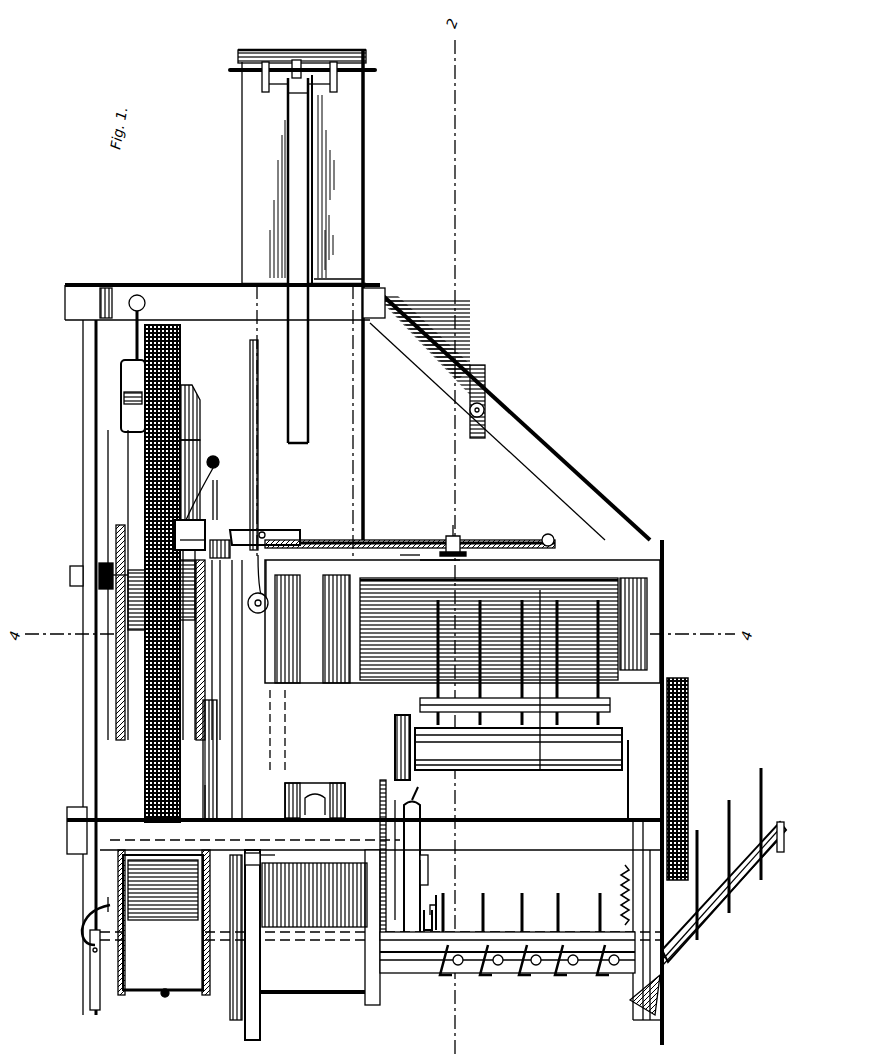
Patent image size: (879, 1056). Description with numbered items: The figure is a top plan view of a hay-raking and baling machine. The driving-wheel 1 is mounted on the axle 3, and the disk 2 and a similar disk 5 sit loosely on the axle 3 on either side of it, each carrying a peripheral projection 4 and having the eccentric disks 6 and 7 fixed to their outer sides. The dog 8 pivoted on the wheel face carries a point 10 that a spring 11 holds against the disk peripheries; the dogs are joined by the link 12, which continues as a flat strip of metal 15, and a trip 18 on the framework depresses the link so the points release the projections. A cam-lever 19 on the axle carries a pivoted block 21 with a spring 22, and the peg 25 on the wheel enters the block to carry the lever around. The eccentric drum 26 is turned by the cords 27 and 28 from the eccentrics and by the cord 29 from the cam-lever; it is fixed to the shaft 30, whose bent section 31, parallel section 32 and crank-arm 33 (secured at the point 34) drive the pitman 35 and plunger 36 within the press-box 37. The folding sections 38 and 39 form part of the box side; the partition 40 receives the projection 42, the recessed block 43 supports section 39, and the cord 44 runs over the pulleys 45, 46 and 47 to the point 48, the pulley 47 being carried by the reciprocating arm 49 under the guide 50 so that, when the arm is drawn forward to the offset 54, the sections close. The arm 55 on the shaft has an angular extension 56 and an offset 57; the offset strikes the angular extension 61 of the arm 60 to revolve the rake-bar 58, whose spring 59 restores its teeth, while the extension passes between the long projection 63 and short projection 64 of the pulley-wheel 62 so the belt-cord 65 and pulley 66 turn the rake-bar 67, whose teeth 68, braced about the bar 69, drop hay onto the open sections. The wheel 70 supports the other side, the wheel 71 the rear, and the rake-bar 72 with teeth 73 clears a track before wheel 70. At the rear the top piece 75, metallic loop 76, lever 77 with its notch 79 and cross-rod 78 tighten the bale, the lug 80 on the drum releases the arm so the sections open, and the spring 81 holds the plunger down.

The driving-wheel 1 is at (145, 705).
The disk 2 is at (145, 630).
The axle 3 is at (78, 586).
The projection 4 is at (128, 598).
The disk 5 is at (190, 630).
The eccentric disk 6 is at (118, 530).
The eccentric disk 7 is at (190, 535).
The dog 8 is at (130, 472).
The point 10 is at (100, 562).
The spring 11 is at (140, 500).
The link 12 is at (122, 396).
The flat strip of metal 15 is at (193, 392).
The trip 18 is at (135, 340).
The cam-lever 19 is at (220, 650).
The pivoted block 21 is at (208, 493).
The spring 22 is at (219, 497).
The peg 25 is at (219, 460).
The eccentric drum 26 is at (163, 922).
The cord 27 is at (205, 960).
The cord 28 is at (125, 990).
The cord 29 is at (225, 768).
The shaft 30 is at (88, 940).
The section 31 is at (98, 912).
The parallel section 32 is at (250, 853).
The crank-arm 33 is at (333, 785).
The point 34 is at (325, 940).
The pitman 35 is at (318, 790).
The plunger 36 is at (372, 545).
The press-box 37 is at (301, 422).
The folding section 38 is at (465, 585).
The folding section 39 is at (560, 582).
The partition 40 is at (520, 560).
The projection 42 is at (548, 534).
The recessed block 43 is at (640, 600).
The cord 44 is at (468, 525).
The pulley 45 is at (451, 530).
The pulley 46 is at (255, 535).
The pulley 47 is at (228, 650).
The point 48 is at (410, 540).
The reciprocating arm 49 is at (258, 708).
The guide 50 is at (227, 577).
The offset 54 is at (268, 855).
The arm 55 is at (422, 830).
The angular extension 56 is at (425, 864).
The offset 57 is at (428, 862).
The revolving rake-bar 58 is at (425, 965).
The spring 59 is at (623, 880).
The arm 60 is at (440, 920).
The angular extension 61 is at (439, 901).
The pulley-wheel 62 is at (415, 848).
The long projection 63 is at (426, 783).
The short projection 64 is at (422, 808).
The belt-cord 65 is at (405, 822).
The pulley 66 is at (396, 722).
The revolving rake-bar 67 is at (518, 749).
The teeth 68 is at (605, 700).
The bar 69 is at (540, 770).
The wheel 70 is at (688, 740).
The wheel 71 is at (487, 378).
The rake-bar 72 is at (718, 935).
The teeth 73 is at (762, 840).
The top piece 75 is at (302, 295).
The metallic loop 76 is at (372, 65).
The lever 77 is at (299, 260).
The cross-rod 78 is at (337, 85).
The notch 79 is at (300, 50).
The lug 80 is at (275, 970).
The spring 81 is at (292, 690).